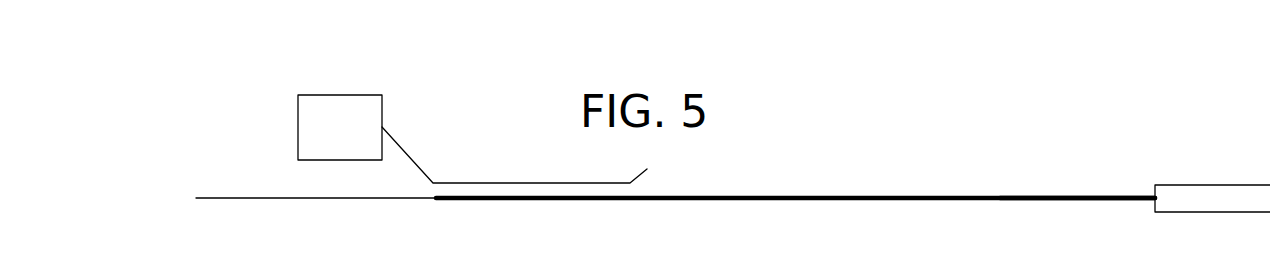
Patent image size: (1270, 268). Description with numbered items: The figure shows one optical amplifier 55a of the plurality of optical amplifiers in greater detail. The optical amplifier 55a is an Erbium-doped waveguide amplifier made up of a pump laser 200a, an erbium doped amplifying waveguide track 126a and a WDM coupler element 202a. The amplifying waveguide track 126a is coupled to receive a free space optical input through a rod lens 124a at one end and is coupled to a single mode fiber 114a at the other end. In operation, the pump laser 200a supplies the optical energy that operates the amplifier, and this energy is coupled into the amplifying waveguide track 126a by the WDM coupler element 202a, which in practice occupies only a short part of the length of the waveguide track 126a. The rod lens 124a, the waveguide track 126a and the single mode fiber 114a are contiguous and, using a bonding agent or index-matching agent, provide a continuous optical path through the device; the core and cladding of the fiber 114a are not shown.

The single mode fiber 114a is at (343, 199).
The pump laser 200a is at (312, 95).
The WDM coupler element 202a is at (518, 183).
The optical amplifier 55a is at (874, 132).
The erbium doped amplifying waveguide track 126a is at (1033, 197).
The rod lens 124a is at (1243, 185).